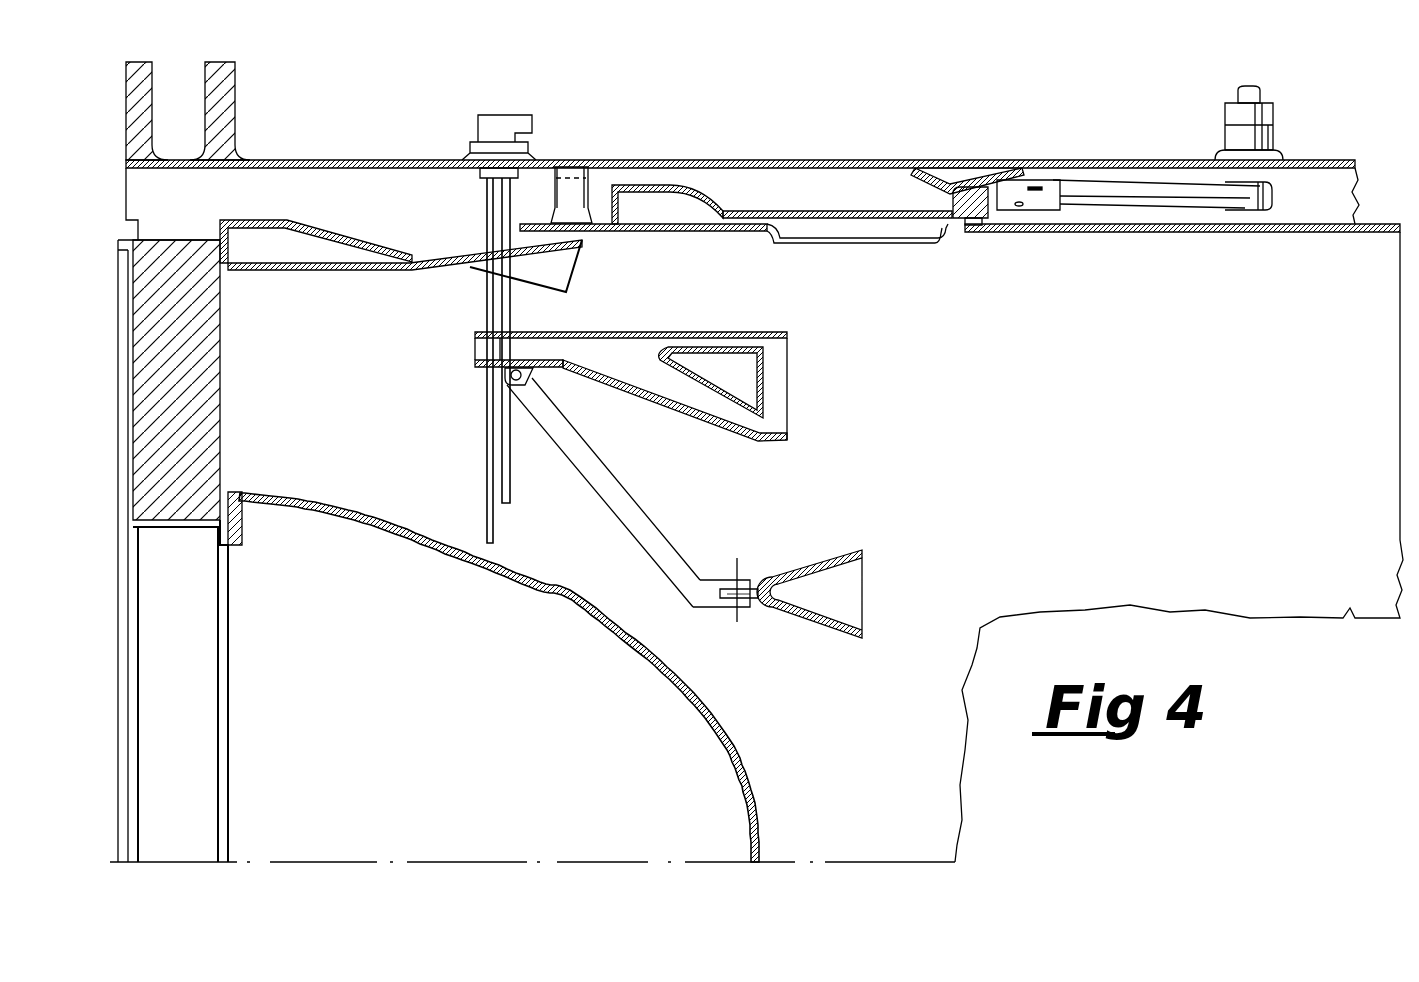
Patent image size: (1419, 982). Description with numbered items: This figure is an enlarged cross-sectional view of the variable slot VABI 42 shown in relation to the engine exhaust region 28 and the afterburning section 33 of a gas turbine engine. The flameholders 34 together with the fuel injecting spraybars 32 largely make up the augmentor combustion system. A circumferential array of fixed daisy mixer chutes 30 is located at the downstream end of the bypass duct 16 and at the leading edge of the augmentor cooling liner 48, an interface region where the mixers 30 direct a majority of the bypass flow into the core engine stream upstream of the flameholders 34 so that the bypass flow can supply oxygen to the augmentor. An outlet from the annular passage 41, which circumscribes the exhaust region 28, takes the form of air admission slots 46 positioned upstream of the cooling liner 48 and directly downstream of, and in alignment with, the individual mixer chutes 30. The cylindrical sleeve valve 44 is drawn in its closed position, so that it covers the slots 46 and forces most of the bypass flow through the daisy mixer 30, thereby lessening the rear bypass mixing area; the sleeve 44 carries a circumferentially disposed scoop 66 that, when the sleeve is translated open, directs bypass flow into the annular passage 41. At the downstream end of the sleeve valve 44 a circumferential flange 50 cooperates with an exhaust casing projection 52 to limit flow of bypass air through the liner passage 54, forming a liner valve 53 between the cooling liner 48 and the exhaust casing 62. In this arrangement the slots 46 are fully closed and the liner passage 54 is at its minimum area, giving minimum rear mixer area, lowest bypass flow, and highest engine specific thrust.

The bypass duct 16 is at (202, 203).
The engine exhaust region 28 is at (1258, 541).
The daisy mixer chutes 30 is at (587, 273).
The fuel injector spraybars 32 is at (483, 438).
The afterburning section 33 is at (748, 645).
The flameholders 34 is at (770, 440).
The annular passage 41 is at (784, 198).
The variable slot VABI 42 is at (827, 150).
The cylindrical sleeve valve 44 is at (888, 209).
The air admission slots 46 is at (835, 233).
The augmentor cooling liner 48 is at (1097, 232).
The circumferential flange 50 is at (942, 228).
The exhaust casing projection 52 is at (972, 167).
The liner valve 53 is at (965, 122).
The liner passage 54 is at (958, 193).
The exhaust casing 62 is at (1080, 160).
The scoop 66 is at (638, 205).